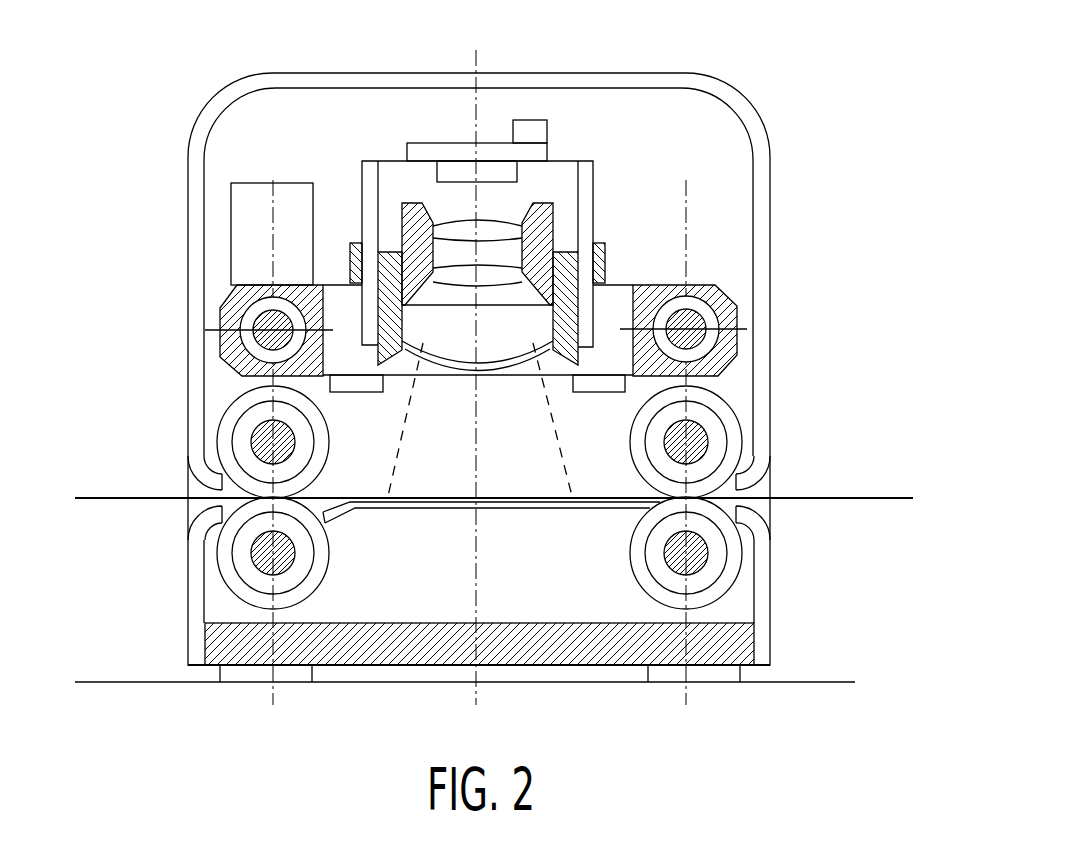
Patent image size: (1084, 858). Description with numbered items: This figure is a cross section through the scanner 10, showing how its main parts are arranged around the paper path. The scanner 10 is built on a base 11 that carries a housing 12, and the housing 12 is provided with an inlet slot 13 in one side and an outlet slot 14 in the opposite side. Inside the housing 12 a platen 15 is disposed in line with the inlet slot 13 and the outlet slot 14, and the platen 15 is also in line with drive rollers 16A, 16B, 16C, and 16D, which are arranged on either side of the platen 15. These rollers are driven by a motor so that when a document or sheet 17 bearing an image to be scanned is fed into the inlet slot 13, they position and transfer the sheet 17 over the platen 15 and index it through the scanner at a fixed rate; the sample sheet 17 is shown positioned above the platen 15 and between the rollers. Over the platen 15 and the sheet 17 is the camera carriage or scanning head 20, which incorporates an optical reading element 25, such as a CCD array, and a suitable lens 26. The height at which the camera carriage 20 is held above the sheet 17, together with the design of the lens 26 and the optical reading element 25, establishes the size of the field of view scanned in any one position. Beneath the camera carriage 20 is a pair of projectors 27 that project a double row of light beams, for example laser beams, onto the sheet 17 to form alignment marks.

The scanner 10 is at (796, 116).
The base 11 is at (480, 666).
The housing 12 is at (766, 297).
The inlet slot 13 is at (187, 506).
The outlet slot 14 is at (770, 507).
The platen 15 is at (495, 508).
The drive roller 16A is at (326, 443).
The drive roller 16B is at (318, 577).
The drive roller 16C is at (640, 468).
The drive roller 16D is at (643, 578).
The sheet 17 is at (853, 497).
The camera carriage 20 is at (612, 222).
The optical reading element 25 is at (498, 190).
The lens 26 is at (490, 348).
The projectors 27 is at (384, 383).